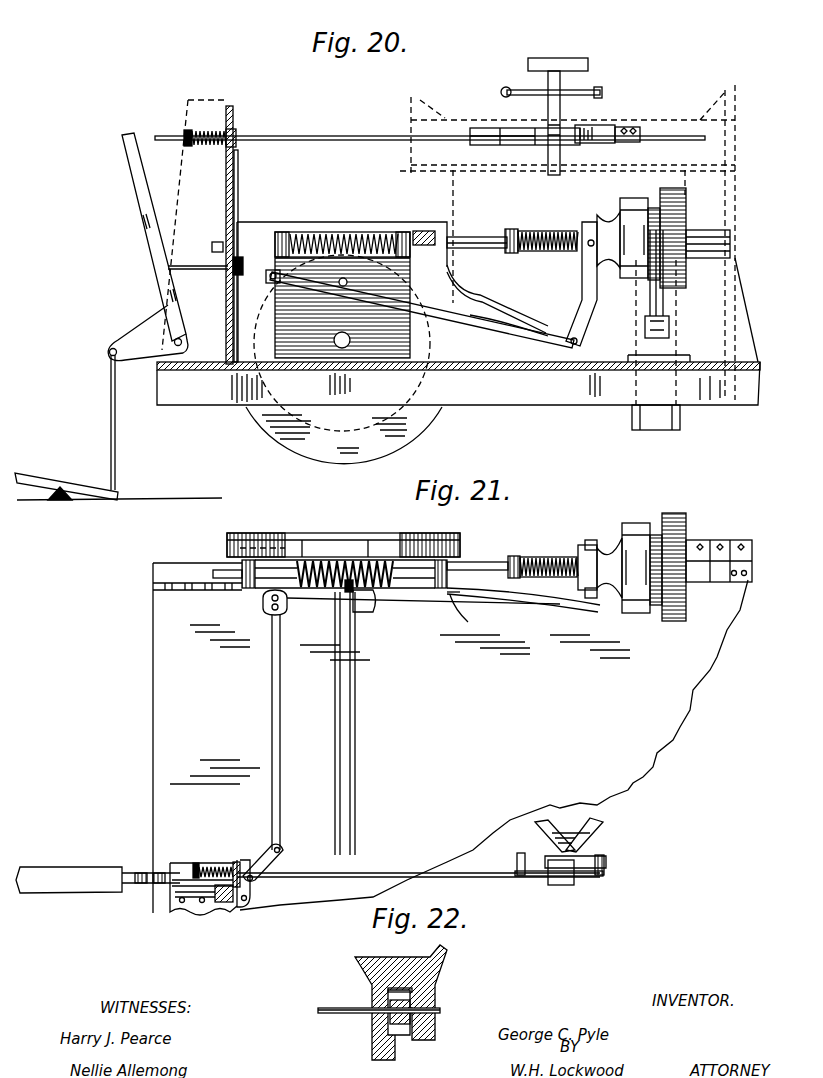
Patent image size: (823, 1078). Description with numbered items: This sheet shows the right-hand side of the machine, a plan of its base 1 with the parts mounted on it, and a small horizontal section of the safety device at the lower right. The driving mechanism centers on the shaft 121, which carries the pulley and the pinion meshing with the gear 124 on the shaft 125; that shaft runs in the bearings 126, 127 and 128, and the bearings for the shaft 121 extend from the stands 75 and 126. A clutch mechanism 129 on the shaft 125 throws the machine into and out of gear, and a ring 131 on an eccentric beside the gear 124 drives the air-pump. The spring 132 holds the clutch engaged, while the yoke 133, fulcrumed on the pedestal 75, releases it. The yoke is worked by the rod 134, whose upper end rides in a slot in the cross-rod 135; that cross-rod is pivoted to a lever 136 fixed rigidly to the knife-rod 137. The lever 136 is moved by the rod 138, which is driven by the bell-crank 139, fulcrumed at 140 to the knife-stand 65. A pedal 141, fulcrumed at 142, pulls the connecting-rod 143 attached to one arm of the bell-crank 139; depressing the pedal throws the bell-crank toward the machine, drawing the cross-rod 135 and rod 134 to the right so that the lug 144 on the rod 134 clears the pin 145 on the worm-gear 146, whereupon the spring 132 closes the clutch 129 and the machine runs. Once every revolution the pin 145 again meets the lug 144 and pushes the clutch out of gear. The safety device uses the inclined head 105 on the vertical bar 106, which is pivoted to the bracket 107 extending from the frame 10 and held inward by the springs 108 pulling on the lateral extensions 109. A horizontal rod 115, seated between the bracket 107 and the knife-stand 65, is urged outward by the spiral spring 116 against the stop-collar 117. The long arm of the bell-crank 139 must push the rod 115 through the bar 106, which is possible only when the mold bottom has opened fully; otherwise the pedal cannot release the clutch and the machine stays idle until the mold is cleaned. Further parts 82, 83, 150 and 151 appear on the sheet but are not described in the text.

In FIG. 20, the base / frame 1 is at (458, 383).
In FIG. 21, the base / frame 1 is at (450, 738).
In FIG. 20, the frame 10 is at (737, 128).
In FIG. 20, the knife-stand 65 is at (178, 186).
In FIG. 21, the knife-stand 65 is at (213, 905).
In FIG. 20, the pedestal 75 is at (509, 323).
In FIG. 20, the bracket below base 82 is at (680, 427).
In FIG. 20, the guide slot member 83 is at (648, 340).
In FIG. 20, the inclined head 105 is at (572, 111).
In FIG. 21, the inclined head 105 is at (606, 861).
In FIG. 20, the vertical bar 106 is at (548, 104).
In FIG. 21, the vertical bar 106 is at (560, 886).
In FIG. 22, the vertical bar 106 is at (398, 1035).
In FIG. 20, the bracket 107 is at (515, 140).
In FIG. 21, the bracket 107 is at (588, 834).
In FIG. 22, the bracket 107 is at (445, 973).
In FIG. 20, the springs 108 is at (590, 90).
In FIG. 21, the springs 108 is at (516, 862).
In FIG. 20, the lateral extensions 109 is at (604, 94).
In FIG. 21, the lateral extensions 109 is at (593, 877).
In FIG. 20, the horizontal rod 115 is at (160, 136).
In FIG. 21, the horizontal rod 115 is at (398, 872).
In FIG. 22, the horizontal rod 115 is at (340, 1005).
In FIG. 20, the spiral spring 116 is at (209, 130).
In FIG. 21, the spiral spring 116 is at (228, 866).
In FIG. 20, the stop-collar 117 is at (237, 133).
In FIG. 21, the stop-collar 117 is at (257, 865).
In FIG. 21, the shaft 121 is at (484, 575).
In FIG. 20, the gear 124 is at (686, 203).
In FIG. 21, the gear 124 is at (686, 528).
In FIG. 20, the shaft 125 is at (480, 237).
In FIG. 20, the bearing 126 is at (730, 243).
In FIG. 21, the bearing 126 is at (752, 565).
In FIG. 20, the bearing 127 is at (433, 223).
In FIG. 21, the bearing 127 is at (455, 610).
In FIG. 20, the bearing 128 is at (253, 225).
In FIG. 21, the bearing 128 is at (230, 582).
In FIG. 20, the clutch mechanism 129 is at (628, 198).
In FIG. 21, the clutch mechanism 129 is at (632, 523).
In FIG. 20, the ring 131 is at (652, 208).
In FIG. 21, the ring 131 is at (656, 535).
In FIG. 20, the spring 132 is at (542, 231).
In FIG. 21, the spring 132 is at (540, 562).
In FIG. 20, the yoke 133 is at (582, 274).
In FIG. 20, the rod 134 is at (378, 298).
In FIG. 21, the rod 134 is at (515, 610).
In FIG. 21, the cross-rod 135 is at (272, 714).
In FIG. 20, the lever 136 is at (252, 274).
In FIG. 21, the lever 136 is at (270, 848).
In FIG. 20, the knife-rod 137 is at (238, 165).
In FIG. 21, the knife-rod 137 is at (252, 898).
In FIG. 20, the rod 138 is at (188, 262).
In FIG. 21, the rod 138 is at (209, 862).
In FIG. 20, the bell-crank 139 is at (163, 292).
In FIG. 21, the bell-crank 139 is at (143, 884).
In FIG. 20, the fulcrum 140 is at (184, 339).
In FIG. 20, the pedal 141 is at (42, 480).
In FIG. 21, the pedal 141 is at (68, 867).
In FIG. 20, the fulcrum 142 is at (60, 490).
In FIG. 20, the connecting-rod 143 is at (117, 448).
In FIG. 21, the lug 144 is at (368, 612).
In FIG. 20, the pin 145 is at (425, 246).
In FIG. 21, the pin 145 is at (345, 592).
In FIG. 20, the worm-gear 146 is at (385, 352).
In FIG. 21, the worm-gear 146 is at (420, 588).
In FIG. 20, the spring 150 is at (355, 232).
In FIG. 20, the shaft 151 is at (340, 348).
In FIG. 21, the shaft 151 is at (355, 718).